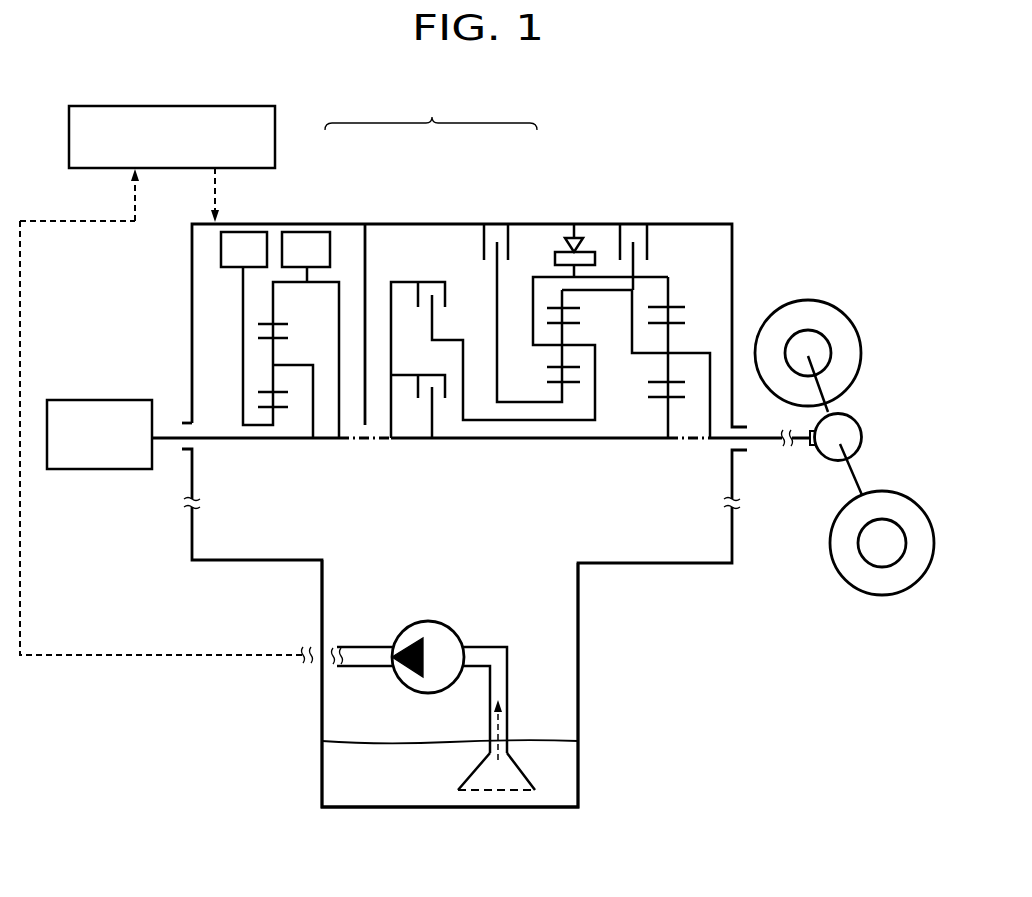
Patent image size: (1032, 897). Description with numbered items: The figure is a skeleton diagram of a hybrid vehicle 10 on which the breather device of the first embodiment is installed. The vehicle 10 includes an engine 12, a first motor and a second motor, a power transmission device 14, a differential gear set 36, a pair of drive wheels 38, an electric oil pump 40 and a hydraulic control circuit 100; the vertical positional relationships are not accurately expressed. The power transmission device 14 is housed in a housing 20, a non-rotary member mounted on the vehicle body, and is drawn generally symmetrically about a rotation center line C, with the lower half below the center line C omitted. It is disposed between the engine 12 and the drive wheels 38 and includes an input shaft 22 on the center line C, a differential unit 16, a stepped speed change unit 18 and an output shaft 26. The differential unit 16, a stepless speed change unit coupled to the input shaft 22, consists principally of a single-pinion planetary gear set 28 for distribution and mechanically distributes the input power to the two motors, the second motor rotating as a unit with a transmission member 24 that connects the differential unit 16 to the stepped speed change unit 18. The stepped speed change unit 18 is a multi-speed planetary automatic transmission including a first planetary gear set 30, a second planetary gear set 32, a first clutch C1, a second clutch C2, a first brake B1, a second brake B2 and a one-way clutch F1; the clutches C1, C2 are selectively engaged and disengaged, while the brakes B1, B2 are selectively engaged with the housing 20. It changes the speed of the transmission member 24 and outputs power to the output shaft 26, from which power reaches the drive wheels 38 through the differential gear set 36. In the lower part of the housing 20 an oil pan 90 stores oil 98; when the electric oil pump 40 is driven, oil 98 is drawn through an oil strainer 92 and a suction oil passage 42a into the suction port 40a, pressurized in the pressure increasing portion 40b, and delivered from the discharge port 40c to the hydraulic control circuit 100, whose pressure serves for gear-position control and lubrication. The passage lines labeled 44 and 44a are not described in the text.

The vehicle 10 is at (706, 86).
The hydraulic control circuit 100 is at (232, 108).
The power transmission device 14 is at (431, 109).
The differential unit 16 is at (307, 205).
The stepped speed change unit 18 is at (554, 205).
The housing 20 is at (733, 268).
The engine 12 is at (125, 410).
The input shaft 22 is at (224, 441).
The transmission member 24 is at (291, 378).
The planetary gear set for distribution 28 is at (288, 418).
The second clutch C2 is at (529, 346).
The first clutch C1 is at (418, 394).
The first brake B1 is at (507, 313).
The one-way clutch F1 is at (561, 250).
The second brake B2 is at (650, 257).
The first planetary gear set 30 is at (578, 398).
The second planetary gear set 32 is at (680, 283).
The output shaft 26 is at (720, 442).
The differential gear set 36 is at (850, 437).
The drive wheels 38 is at (847, 337).
The rotation center line C is at (419, 440).
The oil 98 is at (335, 777).
The oil pan 90 is at (527, 808).
The oil strainer 92 is at (475, 773).
The suction oil passage 42a is at (500, 692).
The discharge oil passage 44 is at (380, 670).
The oil passage 44a is at (255, 652).
The electric oil pump 40 is at (441, 576).
The suction port 40a is at (477, 643).
The pressure increasing portion 40b is at (427, 683).
The discharge port 40c is at (382, 643).